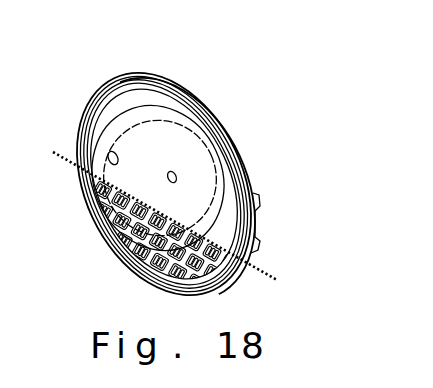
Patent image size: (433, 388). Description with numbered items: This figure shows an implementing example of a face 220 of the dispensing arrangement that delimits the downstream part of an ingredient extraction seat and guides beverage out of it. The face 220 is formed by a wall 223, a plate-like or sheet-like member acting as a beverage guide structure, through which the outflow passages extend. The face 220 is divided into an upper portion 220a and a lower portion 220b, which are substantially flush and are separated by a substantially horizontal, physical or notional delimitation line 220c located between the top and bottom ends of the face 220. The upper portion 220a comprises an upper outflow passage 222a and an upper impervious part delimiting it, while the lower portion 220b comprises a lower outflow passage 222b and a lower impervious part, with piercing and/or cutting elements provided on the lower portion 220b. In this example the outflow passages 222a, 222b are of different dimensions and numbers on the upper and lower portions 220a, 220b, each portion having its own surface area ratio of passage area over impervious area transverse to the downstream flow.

The face 220 is at (166, 135).
The upper portion 220a is at (188, 203).
The lower portion 220b is at (113, 197).
The delimitation line 220c is at (251, 265).
The upper outflow passage 222a is at (165, 163).
The lower outflow passage 222b is at (132, 227).
The wall 223 is at (207, 123).